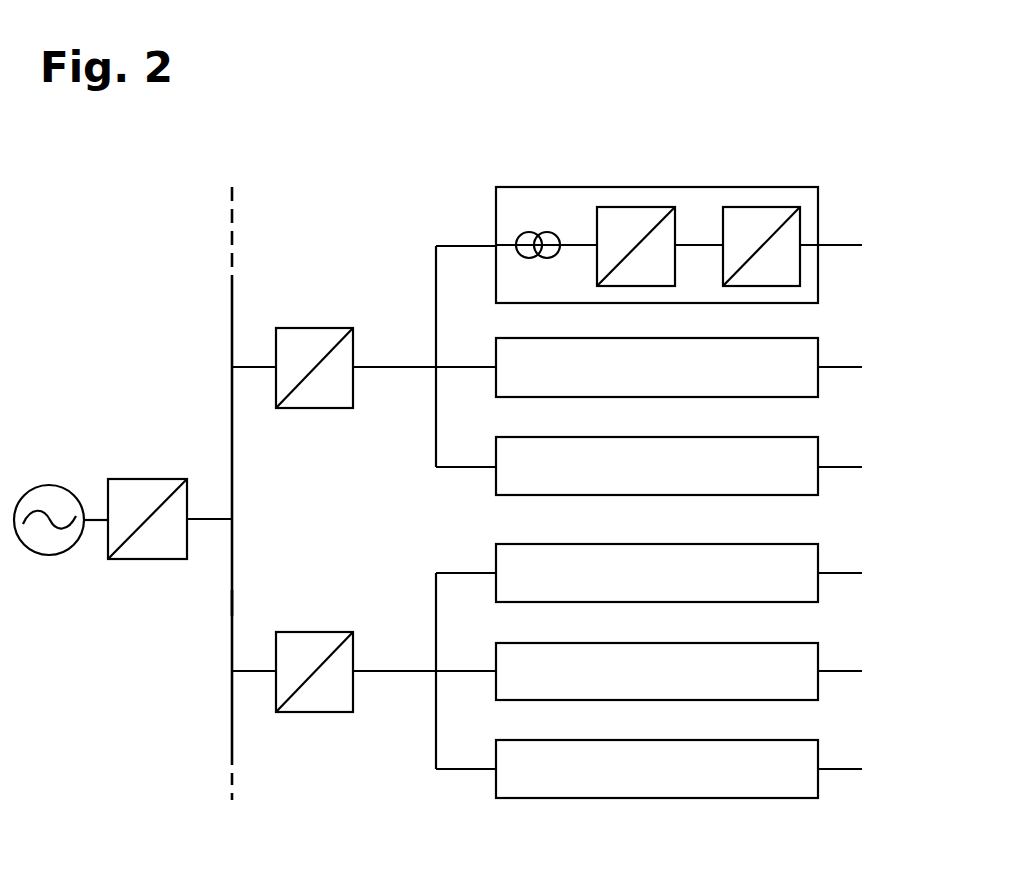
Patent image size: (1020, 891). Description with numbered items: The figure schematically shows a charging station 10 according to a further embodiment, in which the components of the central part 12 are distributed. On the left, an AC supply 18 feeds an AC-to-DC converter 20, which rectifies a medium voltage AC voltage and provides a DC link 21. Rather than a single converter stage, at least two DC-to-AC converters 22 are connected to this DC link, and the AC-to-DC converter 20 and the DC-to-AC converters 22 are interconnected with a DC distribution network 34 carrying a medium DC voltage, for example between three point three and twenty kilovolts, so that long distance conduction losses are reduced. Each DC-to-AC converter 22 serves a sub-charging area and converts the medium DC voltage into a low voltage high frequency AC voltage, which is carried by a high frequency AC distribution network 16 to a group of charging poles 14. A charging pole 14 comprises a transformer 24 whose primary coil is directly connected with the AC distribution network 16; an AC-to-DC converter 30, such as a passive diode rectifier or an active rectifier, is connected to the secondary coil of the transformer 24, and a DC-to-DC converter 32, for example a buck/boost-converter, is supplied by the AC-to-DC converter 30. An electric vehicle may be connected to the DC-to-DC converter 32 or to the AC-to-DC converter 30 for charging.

The charging station 10 is at (190, 174).
The central part 12 is at (120, 650).
The charging pole 14 is at (819, 283).
The high frequency AC distribution network 16 is at (436, 287).
The AC grid source 18 is at (49, 485).
The AC-to-DC converter 20 is at (146, 479).
The DC link 21 is at (194, 328).
The DC-to-AC converter 22 is at (314, 328).
The transformer 24 is at (498, 224).
The AC-to-DC converter 30 is at (636, 207).
The DC-to-DC converter 32 is at (762, 207).
The DC distribution network 34 is at (232, 603).